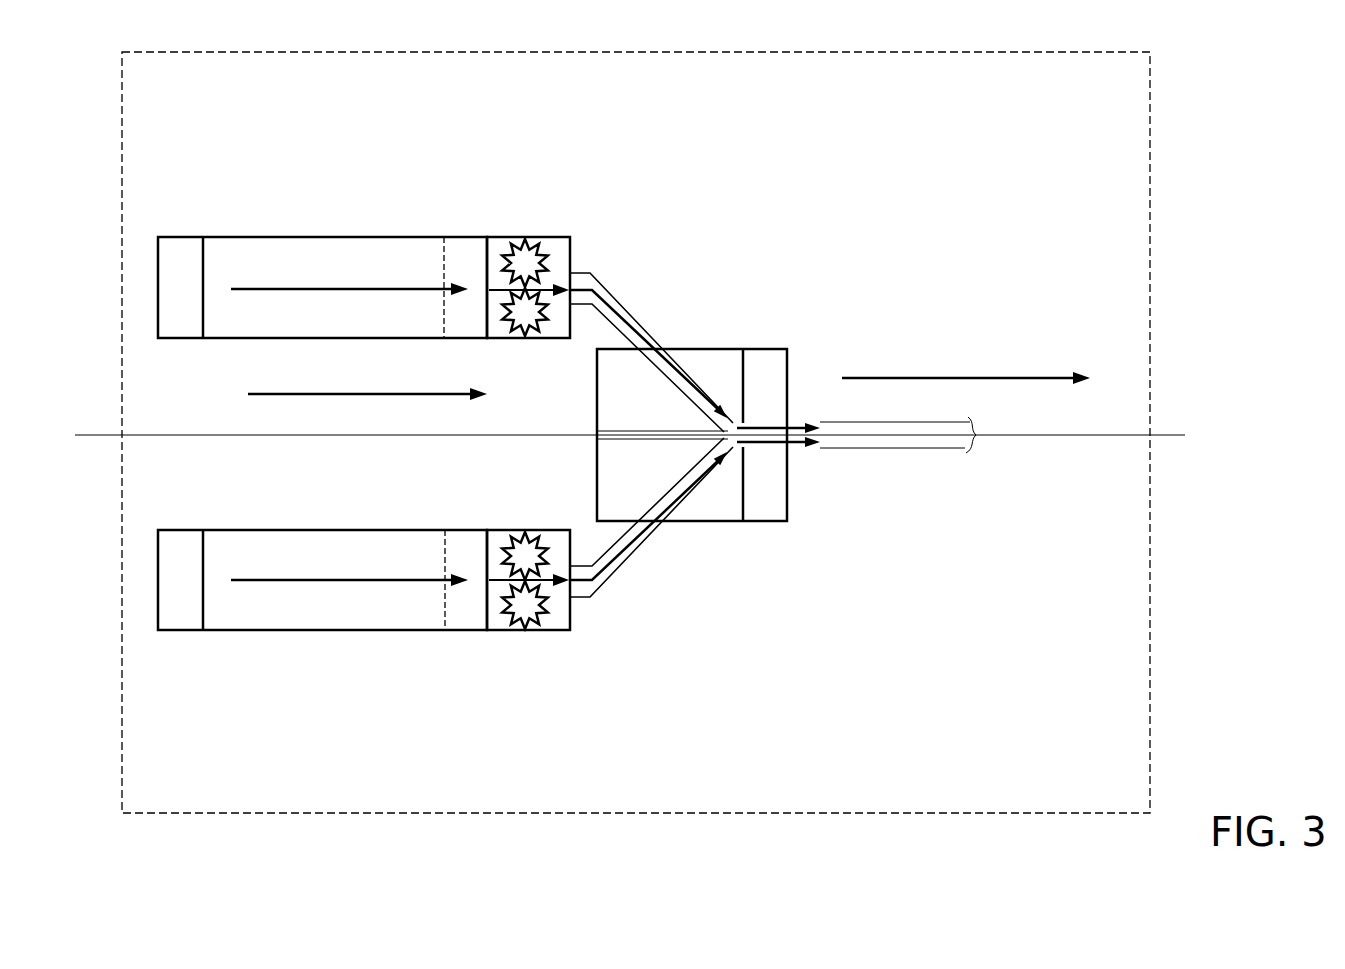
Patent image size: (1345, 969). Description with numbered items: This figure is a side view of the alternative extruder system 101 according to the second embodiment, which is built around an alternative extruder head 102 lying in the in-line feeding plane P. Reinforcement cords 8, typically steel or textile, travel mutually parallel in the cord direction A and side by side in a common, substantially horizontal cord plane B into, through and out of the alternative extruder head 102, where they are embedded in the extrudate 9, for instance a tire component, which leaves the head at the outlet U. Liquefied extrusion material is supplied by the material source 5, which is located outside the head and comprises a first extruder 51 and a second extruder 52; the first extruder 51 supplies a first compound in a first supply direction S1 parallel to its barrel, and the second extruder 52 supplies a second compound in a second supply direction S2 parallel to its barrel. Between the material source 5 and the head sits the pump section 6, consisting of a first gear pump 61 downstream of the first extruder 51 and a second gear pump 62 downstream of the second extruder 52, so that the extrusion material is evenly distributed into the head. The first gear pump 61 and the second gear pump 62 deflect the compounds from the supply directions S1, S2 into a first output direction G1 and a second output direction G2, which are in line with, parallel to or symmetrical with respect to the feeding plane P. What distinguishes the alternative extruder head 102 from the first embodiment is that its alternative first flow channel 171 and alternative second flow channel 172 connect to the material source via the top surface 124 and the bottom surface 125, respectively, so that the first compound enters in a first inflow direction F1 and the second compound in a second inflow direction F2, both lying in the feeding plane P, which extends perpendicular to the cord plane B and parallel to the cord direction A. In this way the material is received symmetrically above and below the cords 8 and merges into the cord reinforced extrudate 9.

The material source 5 is at (222, 530).
The first extruder 51 is at (322, 257).
The second extruder 52 is at (322, 621).
The pump section 6 is at (503, 530).
The first gear pump 61 is at (528, 242).
The second gear pump 62 is at (528, 586).
The cords 8 is at (93, 435).
The extrudate 9 is at (868, 440).
The alternative extruder system 101 is at (740, 218).
The alternative extruder head 102 is at (694, 350).
The top surface 124 is at (664, 335).
The bottom surface 125 is at (658, 517).
The alternative first flow channel 171 is at (675, 388).
The alternative second flow channel 172 is at (675, 482).
The first inflow direction F1 is at (707, 390).
The second inflow direction F2 is at (698, 482).
The first output direction G1 is at (492, 287).
The second output direction G2 is at (495, 535).
The first supply direction S1 is at (349, 276).
The second supply direction S2 is at (349, 568).
The cord direction A is at (669, 376).
The cord plane B is at (1090, 437).
The outlet U is at (782, 419).
The feeding plane P is at (1085, 134).